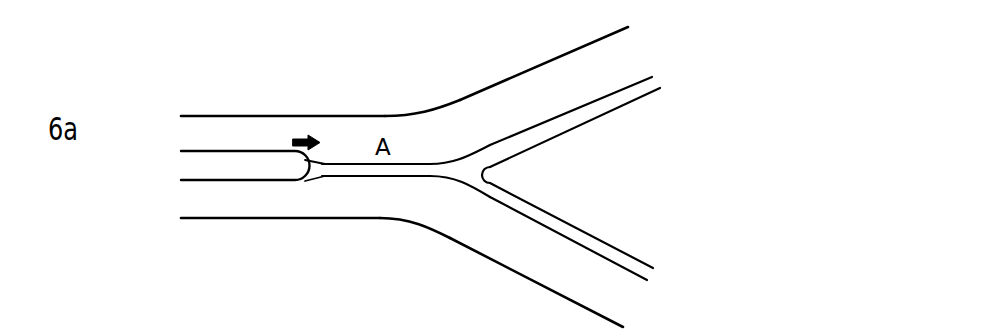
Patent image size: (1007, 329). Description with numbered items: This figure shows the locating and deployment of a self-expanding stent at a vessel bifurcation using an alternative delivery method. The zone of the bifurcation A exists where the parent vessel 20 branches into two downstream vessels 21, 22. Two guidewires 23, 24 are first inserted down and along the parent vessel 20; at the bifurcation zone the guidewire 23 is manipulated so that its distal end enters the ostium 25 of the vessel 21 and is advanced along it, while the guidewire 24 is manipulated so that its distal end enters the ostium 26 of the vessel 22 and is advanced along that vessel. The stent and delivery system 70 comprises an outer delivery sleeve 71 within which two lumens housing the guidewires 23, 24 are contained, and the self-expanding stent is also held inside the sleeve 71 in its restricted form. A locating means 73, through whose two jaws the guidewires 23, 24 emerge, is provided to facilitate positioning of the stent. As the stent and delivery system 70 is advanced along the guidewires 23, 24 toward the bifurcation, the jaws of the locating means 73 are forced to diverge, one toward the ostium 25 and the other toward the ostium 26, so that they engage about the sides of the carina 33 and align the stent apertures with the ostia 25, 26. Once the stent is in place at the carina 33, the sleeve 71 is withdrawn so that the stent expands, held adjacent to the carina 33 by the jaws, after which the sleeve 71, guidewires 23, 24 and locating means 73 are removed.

The parent vessel 20 is at (243, 112).
The downstream vessel 21 is at (568, 53).
The downstream vessel 22 is at (565, 302).
The guidewire 23 is at (638, 75).
The guidewire 24 is at (628, 283).
The ostium 25 is at (453, 133).
The ostium 26 is at (433, 210).
The carina 33 is at (493, 179).
The stent and delivery system 70 is at (210, 190).
The outer delivery sleeve 71 is at (258, 190).
The locating means 73 is at (313, 185).